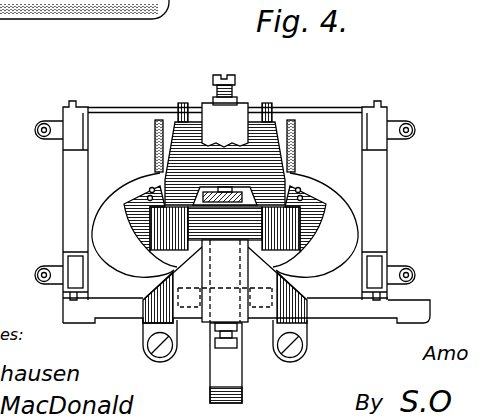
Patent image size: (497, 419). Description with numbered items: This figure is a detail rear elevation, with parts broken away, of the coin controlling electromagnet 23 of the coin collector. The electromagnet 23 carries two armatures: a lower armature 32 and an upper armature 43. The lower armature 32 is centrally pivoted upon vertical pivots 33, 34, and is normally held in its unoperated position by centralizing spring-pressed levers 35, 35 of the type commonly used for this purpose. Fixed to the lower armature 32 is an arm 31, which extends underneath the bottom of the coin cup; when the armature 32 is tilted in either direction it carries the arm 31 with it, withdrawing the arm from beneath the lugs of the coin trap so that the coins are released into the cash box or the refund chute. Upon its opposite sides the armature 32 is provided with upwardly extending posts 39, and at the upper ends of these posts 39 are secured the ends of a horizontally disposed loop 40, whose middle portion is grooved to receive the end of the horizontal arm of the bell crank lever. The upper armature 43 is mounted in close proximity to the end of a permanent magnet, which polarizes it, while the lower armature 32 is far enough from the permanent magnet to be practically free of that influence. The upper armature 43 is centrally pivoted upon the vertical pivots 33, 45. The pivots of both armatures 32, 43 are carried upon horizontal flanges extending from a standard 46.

The electromagnet 23 is at (97, 213).
The arm 31 is at (212, 377).
The armature 32 is at (308, 234).
The vertical pivot 33 is at (225, 223).
The vertical pivot 34 is at (236, 346).
The centralizing spring-pressed levers 35 is at (112, 107).
The posts 39 is at (158, 148).
The loop 40 is at (270, 128).
The upper armature 43 is at (294, 171).
The vertical pivot 45 is at (230, 73).
The standard 46 is at (225, 281).